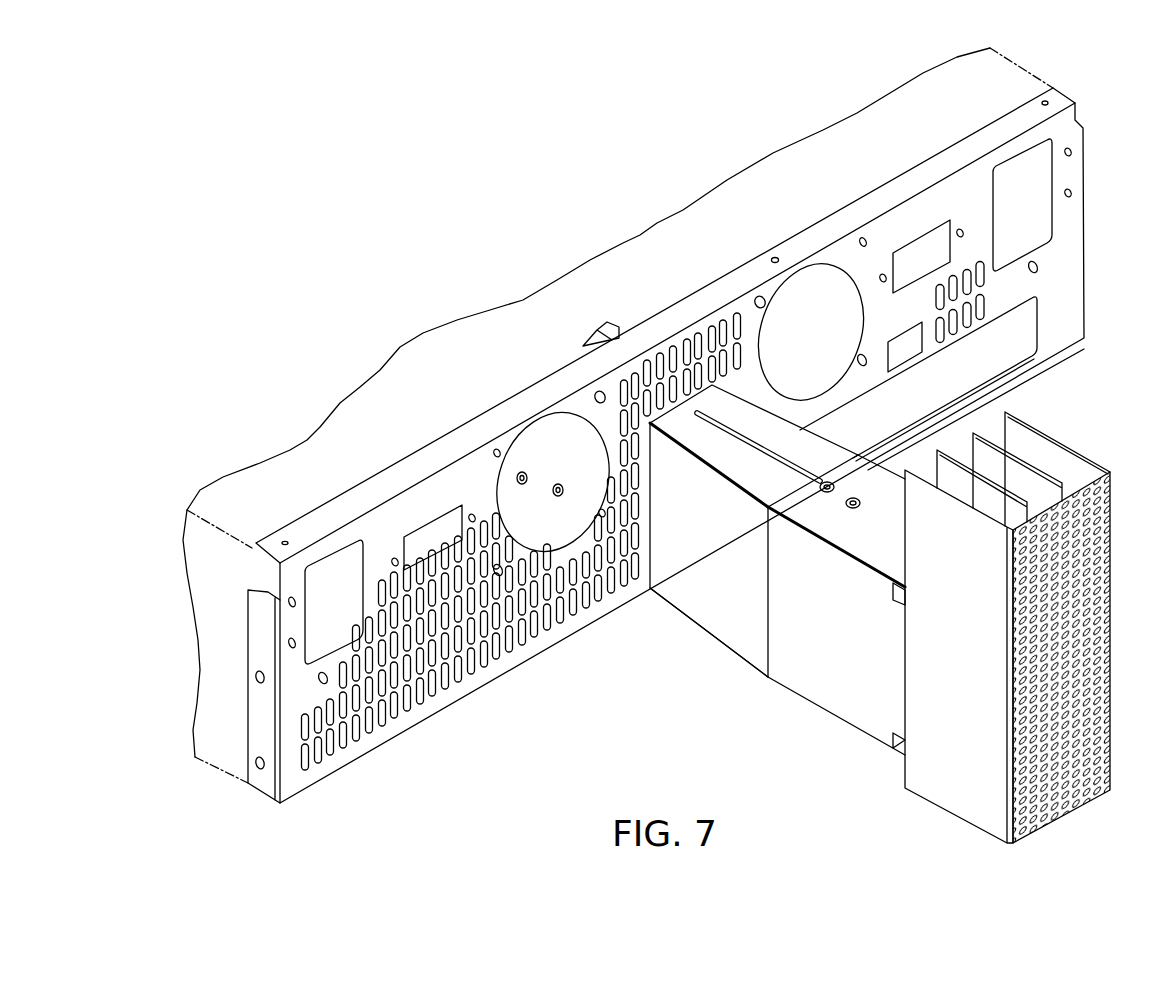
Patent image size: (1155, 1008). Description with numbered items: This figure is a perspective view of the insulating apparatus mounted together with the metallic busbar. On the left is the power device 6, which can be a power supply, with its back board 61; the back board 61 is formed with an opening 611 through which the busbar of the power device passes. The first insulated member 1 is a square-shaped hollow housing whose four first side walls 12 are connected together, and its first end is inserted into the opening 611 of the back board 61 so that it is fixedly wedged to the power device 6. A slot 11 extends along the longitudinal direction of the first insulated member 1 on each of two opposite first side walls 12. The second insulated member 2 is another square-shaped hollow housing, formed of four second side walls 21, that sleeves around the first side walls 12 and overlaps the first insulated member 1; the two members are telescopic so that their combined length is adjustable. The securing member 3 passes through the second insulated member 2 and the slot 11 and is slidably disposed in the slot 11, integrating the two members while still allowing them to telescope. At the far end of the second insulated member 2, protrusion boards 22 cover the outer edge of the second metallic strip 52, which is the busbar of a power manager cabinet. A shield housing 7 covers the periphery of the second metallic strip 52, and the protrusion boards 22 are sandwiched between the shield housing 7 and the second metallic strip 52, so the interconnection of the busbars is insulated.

The first insulated member 1 is at (744, 546).
The slot 11 is at (748, 452).
The first side wall 12 is at (768, 475).
The second insulated member 2 is at (831, 626).
The second side wall 21 is at (887, 543).
The protrusion board 22 is at (902, 670).
The securing member 3 is at (845, 518).
The second metallic strip 52 is at (1023, 465).
The power device 6 is at (1028, 73).
The back board 61 is at (1075, 243).
The opening 611 is at (698, 330).
The shield housing 7 is at (1016, 610).